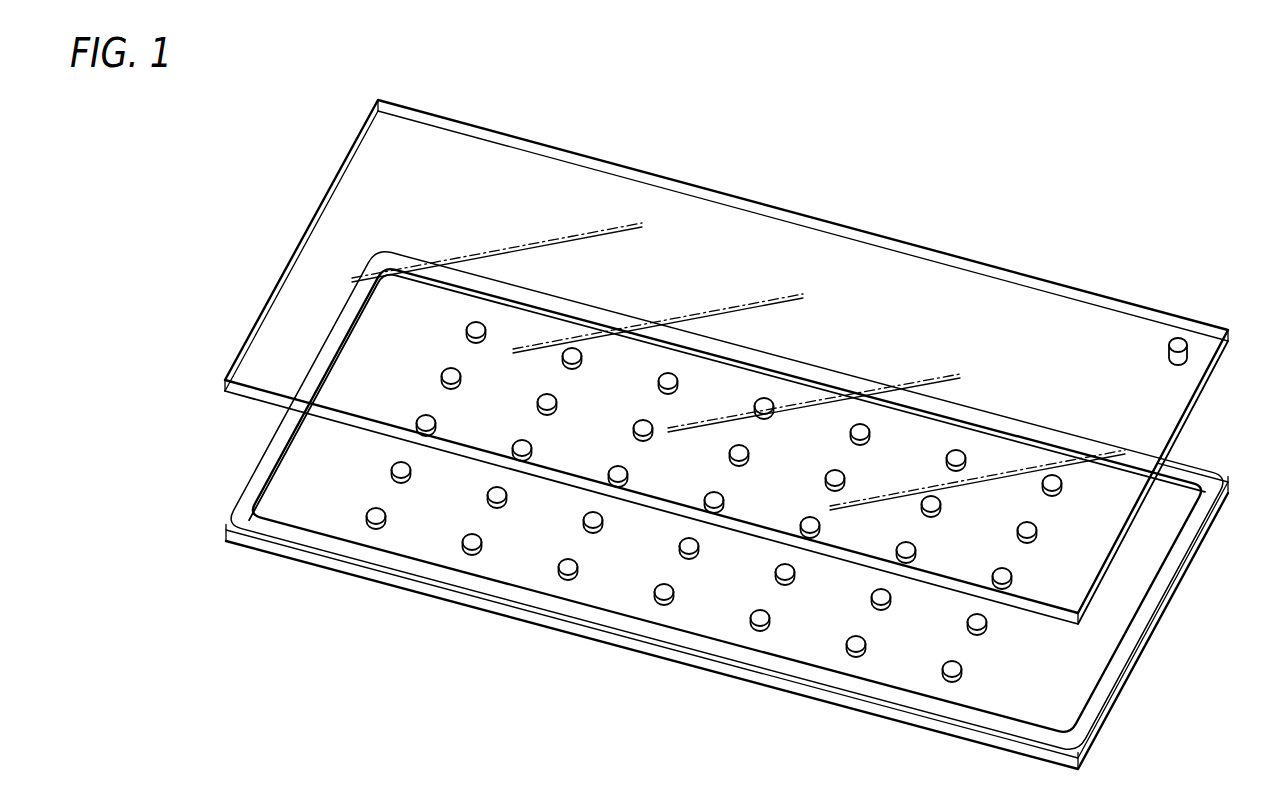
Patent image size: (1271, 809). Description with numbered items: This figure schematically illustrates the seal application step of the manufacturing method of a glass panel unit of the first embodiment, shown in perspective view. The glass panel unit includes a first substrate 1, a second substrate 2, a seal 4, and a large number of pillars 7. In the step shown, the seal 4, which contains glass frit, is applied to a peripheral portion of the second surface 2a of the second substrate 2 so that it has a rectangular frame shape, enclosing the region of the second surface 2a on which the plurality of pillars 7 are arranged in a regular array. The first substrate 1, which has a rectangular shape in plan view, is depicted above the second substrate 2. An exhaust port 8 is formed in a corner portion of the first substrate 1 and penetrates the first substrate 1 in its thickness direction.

The first substrate 1 is at (1018, 298).
The second substrate 2 is at (725, 668).
The second surface 2a is at (695, 612).
The seal 4 is at (1135, 633).
The pillars 7 is at (470, 532).
The exhaust port 8 is at (1180, 338).